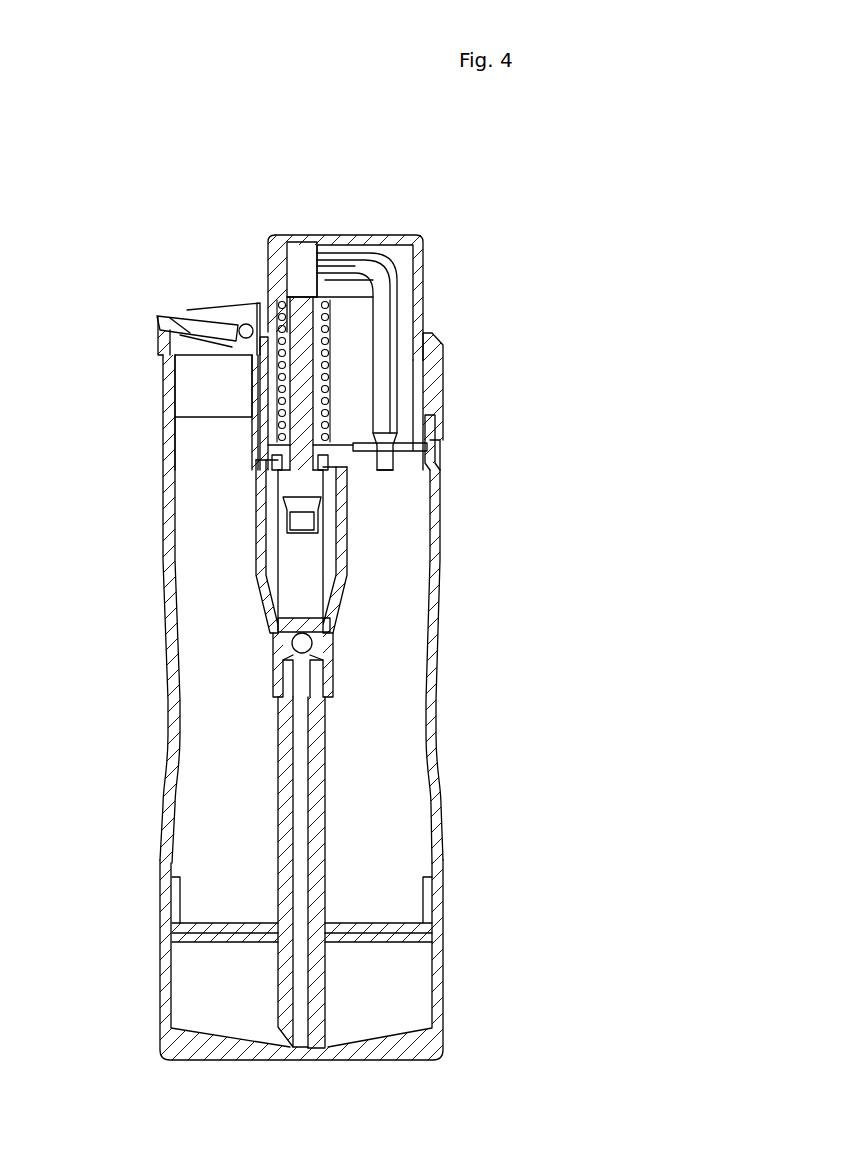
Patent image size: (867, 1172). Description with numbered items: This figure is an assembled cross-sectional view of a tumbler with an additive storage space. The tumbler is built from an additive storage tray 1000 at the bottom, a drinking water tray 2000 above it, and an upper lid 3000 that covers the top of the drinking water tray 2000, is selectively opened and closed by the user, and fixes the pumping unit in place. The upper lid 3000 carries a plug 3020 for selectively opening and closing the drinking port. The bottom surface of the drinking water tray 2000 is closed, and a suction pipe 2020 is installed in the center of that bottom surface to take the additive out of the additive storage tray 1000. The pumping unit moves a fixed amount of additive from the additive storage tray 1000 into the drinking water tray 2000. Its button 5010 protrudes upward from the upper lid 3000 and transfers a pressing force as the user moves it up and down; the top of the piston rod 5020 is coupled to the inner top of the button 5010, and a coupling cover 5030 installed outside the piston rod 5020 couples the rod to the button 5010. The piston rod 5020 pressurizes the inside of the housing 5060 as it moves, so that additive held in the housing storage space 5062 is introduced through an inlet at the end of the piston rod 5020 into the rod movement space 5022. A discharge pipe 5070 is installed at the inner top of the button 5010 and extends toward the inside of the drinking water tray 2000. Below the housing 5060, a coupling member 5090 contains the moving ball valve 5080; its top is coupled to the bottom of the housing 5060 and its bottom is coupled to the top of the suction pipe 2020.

The additive storage tray 1000 is at (438, 958).
The drinking water tray 2000 is at (430, 742).
The suction pipe 2020 is at (335, 850).
The upper lid 3000 is at (165, 365).
The plug 3020 is at (177, 313).
The button 5010 is at (330, 237).
The piston rod 5020 is at (370, 420).
The rod movement space 5022 is at (375, 445).
The coupling cover 5030 is at (380, 385).
The housing 5060 is at (357, 542).
The housing storage space 5062 is at (307, 572).
The discharge pipe 5070 is at (428, 310).
The moving ball valve 5080 is at (345, 648).
The coupling member 5090 is at (340, 682).